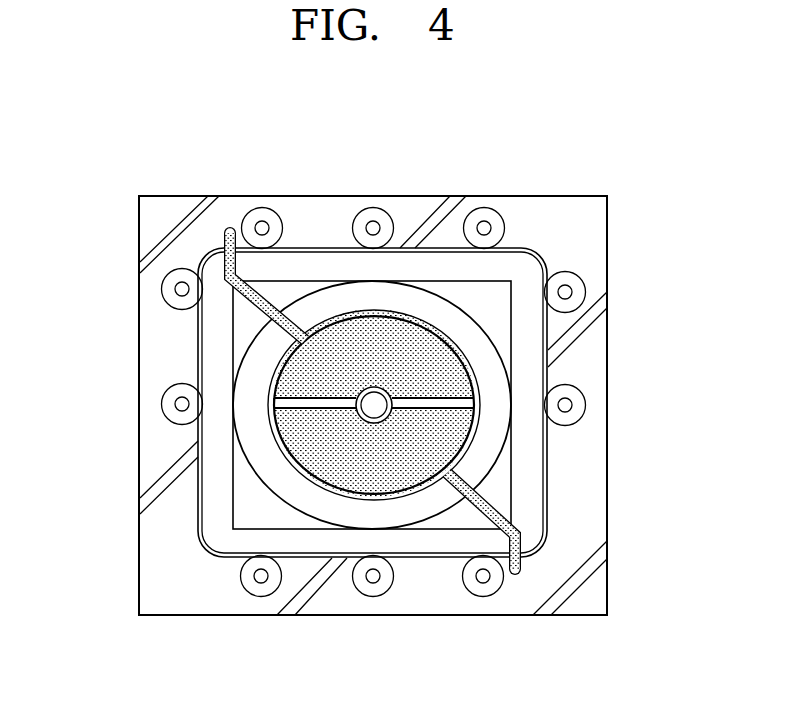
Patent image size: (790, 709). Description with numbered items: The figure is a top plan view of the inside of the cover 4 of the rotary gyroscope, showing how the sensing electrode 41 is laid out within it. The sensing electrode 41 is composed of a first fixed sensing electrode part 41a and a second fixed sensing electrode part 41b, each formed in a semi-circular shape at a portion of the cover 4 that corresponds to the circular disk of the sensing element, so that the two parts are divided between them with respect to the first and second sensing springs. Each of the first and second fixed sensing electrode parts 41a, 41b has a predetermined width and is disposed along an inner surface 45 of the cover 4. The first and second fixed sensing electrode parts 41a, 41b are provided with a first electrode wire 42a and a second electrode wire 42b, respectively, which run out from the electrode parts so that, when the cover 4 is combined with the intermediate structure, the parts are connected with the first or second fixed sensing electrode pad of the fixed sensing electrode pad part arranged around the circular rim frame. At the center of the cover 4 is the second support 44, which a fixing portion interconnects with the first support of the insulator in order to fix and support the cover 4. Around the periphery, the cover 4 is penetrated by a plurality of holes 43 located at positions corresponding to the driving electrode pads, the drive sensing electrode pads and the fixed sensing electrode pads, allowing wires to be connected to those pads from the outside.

The cover 4 is at (108, 144).
The sensing electrode 41 is at (474, 355).
The first fixed sensing electrode part 41a is at (448, 365).
The second fixed sensing electrode part 41b is at (452, 445).
The first electrode wire 42a is at (224, 248).
The second electrode wire 42b is at (506, 528).
The holes 43 is at (373, 228).
The second support 44 is at (376, 405).
The inner surface 45 is at (257, 334).